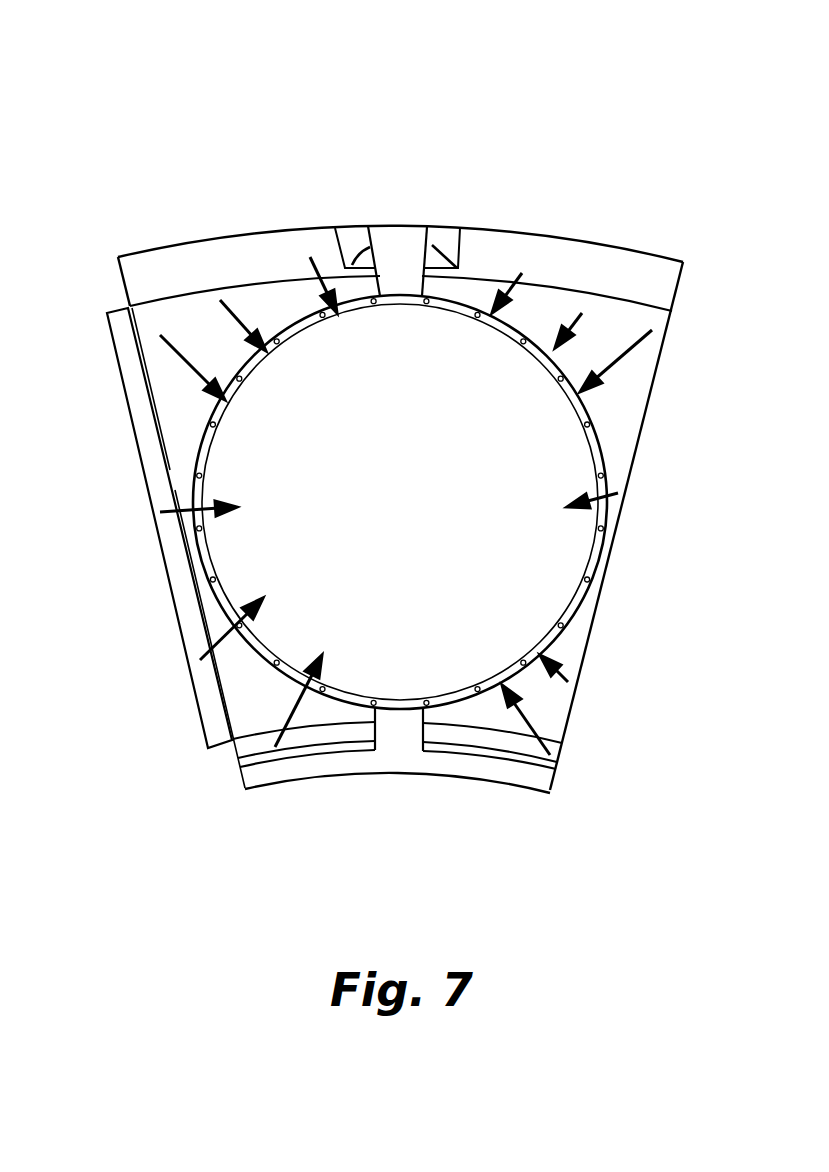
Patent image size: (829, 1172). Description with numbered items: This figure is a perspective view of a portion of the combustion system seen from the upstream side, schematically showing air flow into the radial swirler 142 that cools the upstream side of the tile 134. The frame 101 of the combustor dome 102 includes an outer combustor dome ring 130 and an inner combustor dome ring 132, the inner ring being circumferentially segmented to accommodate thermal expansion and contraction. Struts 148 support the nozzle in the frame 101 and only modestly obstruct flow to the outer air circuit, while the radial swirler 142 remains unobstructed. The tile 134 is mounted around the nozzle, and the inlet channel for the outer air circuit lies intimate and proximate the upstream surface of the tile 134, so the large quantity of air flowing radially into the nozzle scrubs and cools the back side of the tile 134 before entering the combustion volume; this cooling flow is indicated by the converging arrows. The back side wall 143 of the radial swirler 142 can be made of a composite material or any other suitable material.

The frame 101 is at (611, 243).
The combustor dome 102 is at (120, 128).
The outer combustor dome ring 130 is at (273, 247).
The inner combustor dome ring 132 is at (512, 773).
The tile 134 is at (123, 390).
The radial swirler 142 is at (543, 448).
The back side wall 143 is at (427, 511).
The struts 148 is at (403, 250).